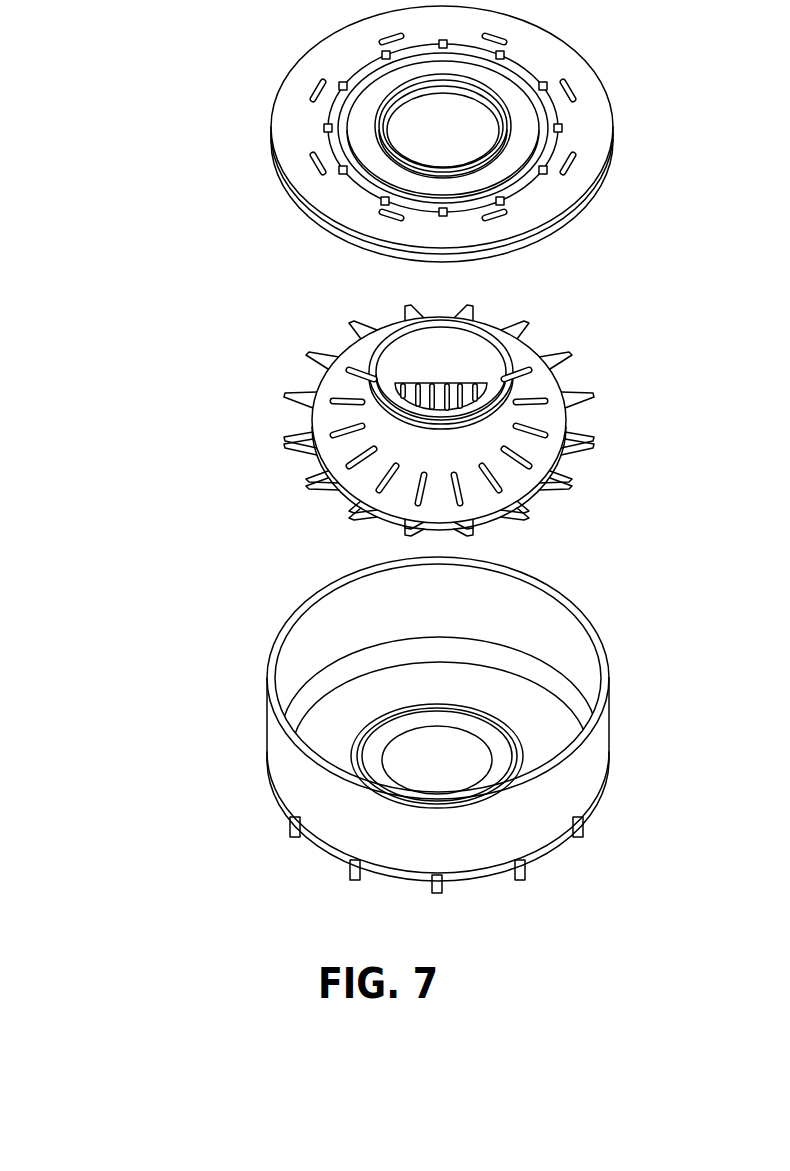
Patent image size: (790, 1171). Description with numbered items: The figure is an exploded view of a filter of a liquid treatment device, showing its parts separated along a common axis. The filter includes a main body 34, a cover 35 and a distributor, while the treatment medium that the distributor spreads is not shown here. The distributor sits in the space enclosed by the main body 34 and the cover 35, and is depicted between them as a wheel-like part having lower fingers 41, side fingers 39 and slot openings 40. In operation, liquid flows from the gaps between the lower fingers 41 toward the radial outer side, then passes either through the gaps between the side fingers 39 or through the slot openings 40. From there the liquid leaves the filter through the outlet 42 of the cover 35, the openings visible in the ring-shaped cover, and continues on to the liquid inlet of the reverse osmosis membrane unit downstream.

The main body 34 is at (280, 749).
The cover 35 is at (277, 177).
The side fingers 39 is at (287, 398).
The slot openings 40 is at (337, 430).
The lower fingers 41 is at (445, 398).
The outlet 42 is at (312, 96).